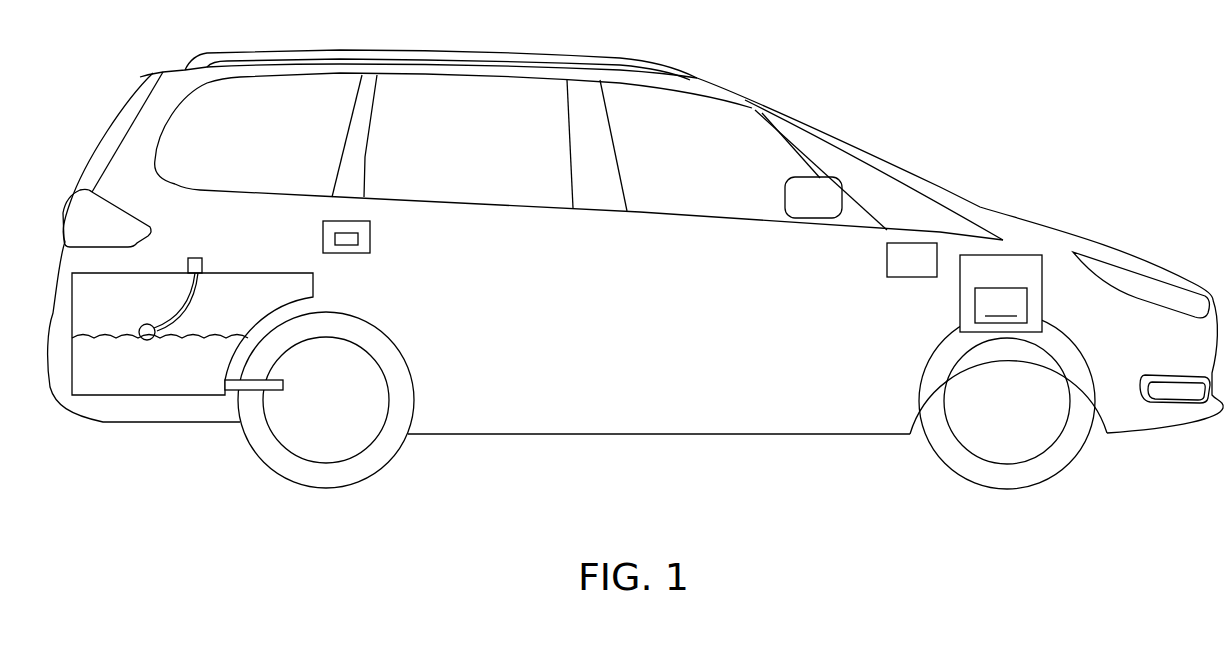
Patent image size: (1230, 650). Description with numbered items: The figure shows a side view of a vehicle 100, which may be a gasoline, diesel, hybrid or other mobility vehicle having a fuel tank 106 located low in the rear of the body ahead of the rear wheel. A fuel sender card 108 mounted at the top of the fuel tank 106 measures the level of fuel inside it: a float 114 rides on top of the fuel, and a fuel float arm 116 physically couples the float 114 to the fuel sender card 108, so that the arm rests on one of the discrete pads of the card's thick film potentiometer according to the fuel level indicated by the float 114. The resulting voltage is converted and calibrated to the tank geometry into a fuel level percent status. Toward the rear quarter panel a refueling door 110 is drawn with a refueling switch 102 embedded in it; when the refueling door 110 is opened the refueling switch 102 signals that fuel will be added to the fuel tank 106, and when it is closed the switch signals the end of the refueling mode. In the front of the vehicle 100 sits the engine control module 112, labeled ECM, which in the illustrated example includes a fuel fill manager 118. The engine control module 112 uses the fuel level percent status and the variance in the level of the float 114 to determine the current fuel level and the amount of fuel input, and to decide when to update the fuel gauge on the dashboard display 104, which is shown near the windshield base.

The vehicle 100 is at (763, 100).
The refueling switch 102 is at (358, 240).
The dashboard display 104 is at (887, 261).
The fuel tank 106 is at (313, 285).
The fuel sender card 108 is at (202, 260).
The refueling door 110 is at (370, 230).
The engine control module 112 is at (1013, 250).
The float 114 is at (147, 324).
The fuel float arm 116 is at (190, 307).
The fuel fill manager 118 is at (1001, 305).